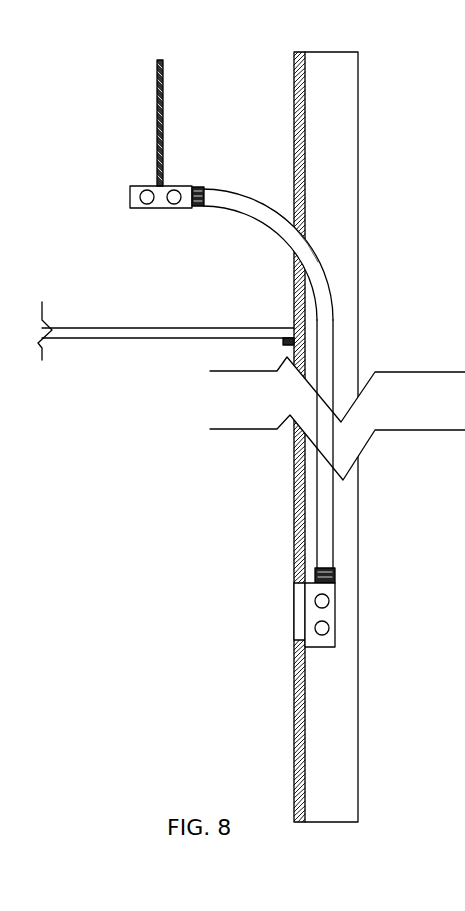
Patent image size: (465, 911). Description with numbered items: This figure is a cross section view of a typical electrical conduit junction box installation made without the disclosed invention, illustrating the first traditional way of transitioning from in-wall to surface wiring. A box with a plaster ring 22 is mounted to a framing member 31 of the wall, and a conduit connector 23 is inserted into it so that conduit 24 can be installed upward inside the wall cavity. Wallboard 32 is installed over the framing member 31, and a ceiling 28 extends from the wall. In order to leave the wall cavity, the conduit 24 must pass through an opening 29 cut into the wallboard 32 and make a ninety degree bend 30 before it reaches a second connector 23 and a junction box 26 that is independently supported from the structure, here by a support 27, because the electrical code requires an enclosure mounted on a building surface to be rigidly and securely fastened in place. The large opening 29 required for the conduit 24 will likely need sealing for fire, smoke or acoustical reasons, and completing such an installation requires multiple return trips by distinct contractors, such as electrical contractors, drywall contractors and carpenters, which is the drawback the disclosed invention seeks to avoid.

The plaster ring 22 is at (320, 616).
The conduit connector 23 is at (200, 210).
The conduit 24 is at (334, 343).
The upper mounting block 26 is at (124, 197).
The support rod 27 is at (157, 132).
The ceiling 28 is at (153, 323).
The wall opening 29 is at (307, 203).
The curved tube section 30 is at (312, 247).
The framing member 31 is at (323, 437).
The wallboard 32 is at (290, 90).